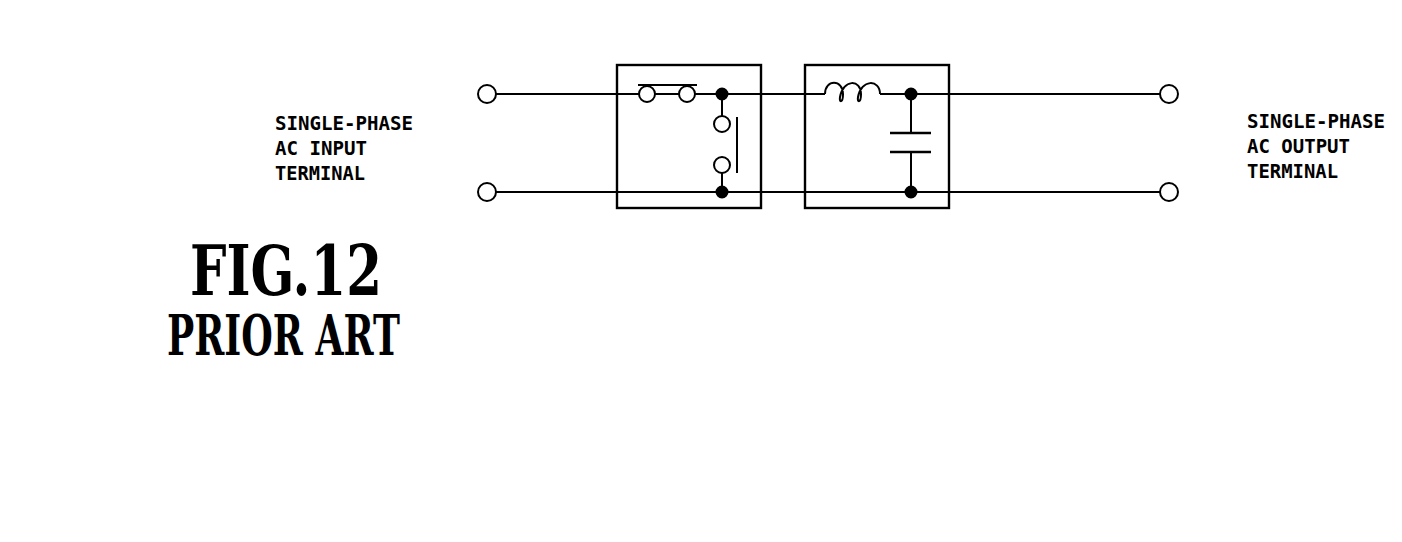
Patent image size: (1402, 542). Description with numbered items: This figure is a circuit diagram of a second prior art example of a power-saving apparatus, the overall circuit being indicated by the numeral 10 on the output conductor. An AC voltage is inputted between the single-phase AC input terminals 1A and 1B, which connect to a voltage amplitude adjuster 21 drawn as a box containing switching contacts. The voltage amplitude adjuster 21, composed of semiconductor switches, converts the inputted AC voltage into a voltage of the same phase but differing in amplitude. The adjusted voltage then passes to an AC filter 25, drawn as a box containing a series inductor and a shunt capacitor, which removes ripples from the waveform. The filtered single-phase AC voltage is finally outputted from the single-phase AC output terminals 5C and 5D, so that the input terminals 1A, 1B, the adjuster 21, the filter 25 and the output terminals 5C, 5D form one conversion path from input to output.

The single-phase AC input terminal 1A is at (464, 99).
The single-phase AC input terminal 1B is at (464, 195).
The single-phase AC output terminal 5C is at (1188, 99).
The single-phase AC output terminal 5D is at (1188, 195).
The prior art power conditioning device 10 is at (1008, 93).
The voltage amplitude adjuster 21 is at (667, 208).
The AC filter 25 is at (870, 208).